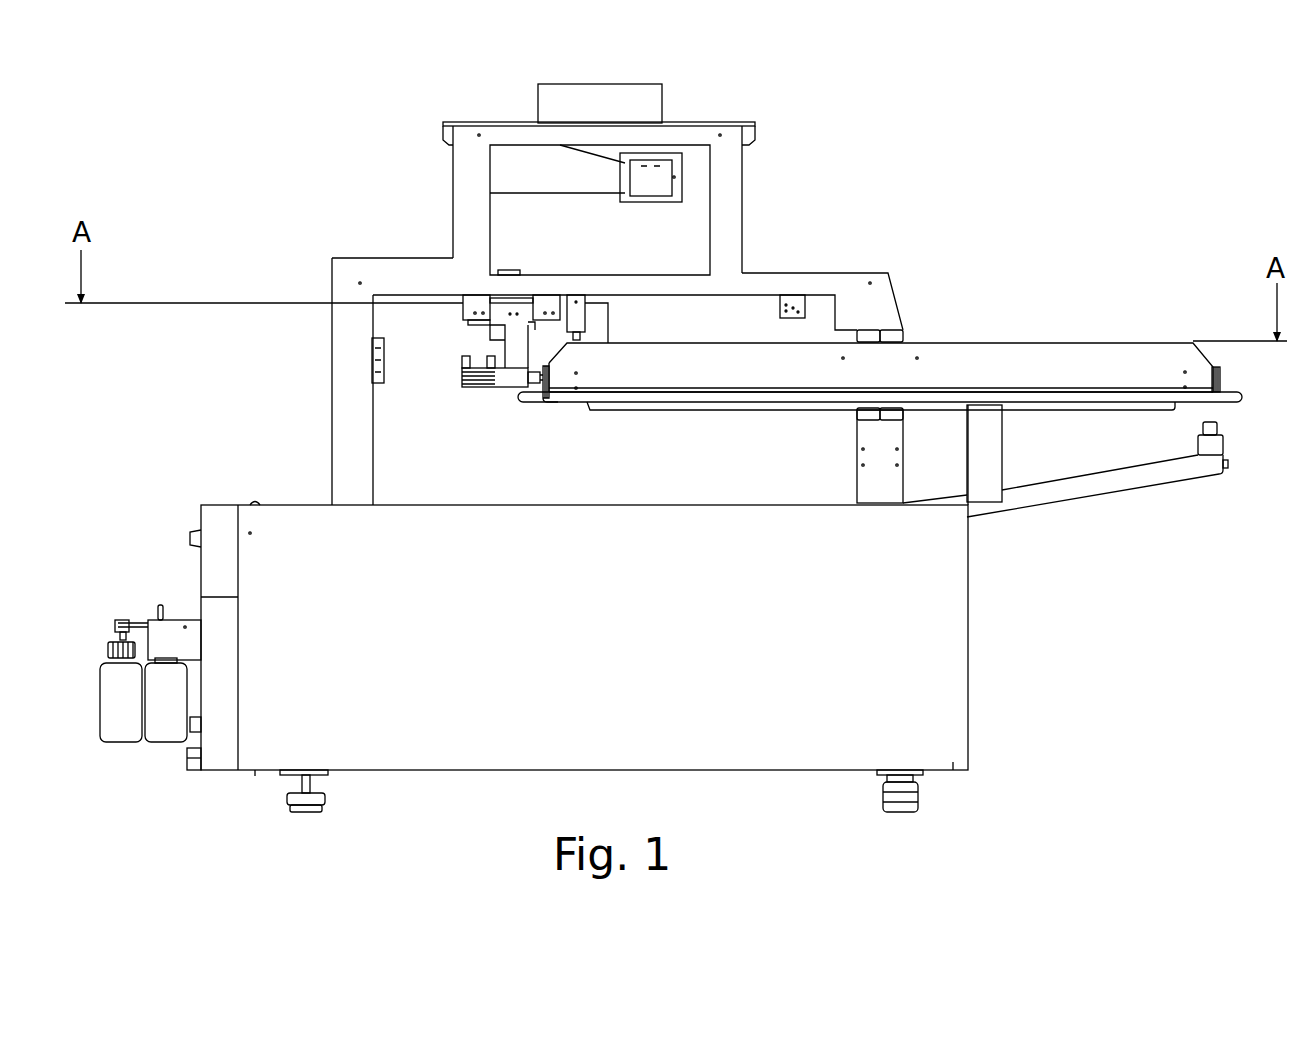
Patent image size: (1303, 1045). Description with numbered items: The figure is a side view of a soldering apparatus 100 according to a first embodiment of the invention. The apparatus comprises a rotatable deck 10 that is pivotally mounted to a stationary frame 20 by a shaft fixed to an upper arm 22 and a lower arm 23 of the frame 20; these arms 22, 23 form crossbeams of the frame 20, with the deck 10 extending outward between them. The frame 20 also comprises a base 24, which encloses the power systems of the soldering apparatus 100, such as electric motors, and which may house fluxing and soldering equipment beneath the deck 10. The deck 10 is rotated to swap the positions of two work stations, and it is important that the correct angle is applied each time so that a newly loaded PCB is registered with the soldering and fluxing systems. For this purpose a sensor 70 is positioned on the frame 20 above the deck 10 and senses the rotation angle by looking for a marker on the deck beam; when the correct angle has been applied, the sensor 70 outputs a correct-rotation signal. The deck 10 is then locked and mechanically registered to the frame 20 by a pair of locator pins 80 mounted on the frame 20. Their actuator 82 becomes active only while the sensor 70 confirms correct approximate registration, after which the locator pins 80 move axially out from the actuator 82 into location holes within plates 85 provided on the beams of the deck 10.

The soldering apparatus 100 is at (970, 185).
The frame 20 is at (447, 118).
The upper arm 22 is at (888, 313).
The sensor 70 is at (585, 312).
The actuator 82 is at (508, 378).
The locator pins 80 is at (535, 382).
The rotatable deck 10 is at (1173, 340).
The plates 85 is at (1216, 368).
The lower arm 23 is at (873, 437).
The base 24 is at (937, 729).